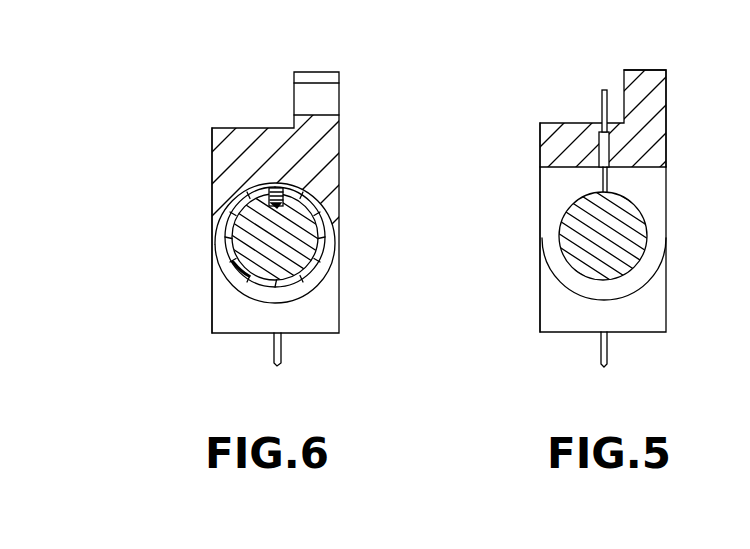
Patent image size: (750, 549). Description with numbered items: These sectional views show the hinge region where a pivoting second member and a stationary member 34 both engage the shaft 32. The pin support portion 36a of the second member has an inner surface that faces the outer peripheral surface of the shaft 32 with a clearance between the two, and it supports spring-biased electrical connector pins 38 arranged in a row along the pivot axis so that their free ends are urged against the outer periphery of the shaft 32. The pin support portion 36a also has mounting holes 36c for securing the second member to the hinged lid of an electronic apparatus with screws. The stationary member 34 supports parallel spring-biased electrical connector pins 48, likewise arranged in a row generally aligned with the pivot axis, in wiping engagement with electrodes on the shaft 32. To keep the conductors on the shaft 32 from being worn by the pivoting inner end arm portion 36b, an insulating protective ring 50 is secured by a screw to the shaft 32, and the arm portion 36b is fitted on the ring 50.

In FIG. 6, the shaft 32 is at (297, 230).
In FIG. 5, the shaft 32 is at (630, 232).
In FIG. 6, the stationary member 34 is at (327, 303).
In FIG. 5, the stationary member 34 is at (650, 310).
In FIG. 5, the pin support portion 36a is at (650, 135).
In FIG. 6, the arm portion 36b is at (212, 222).
In FIG. 5, the arm portion 36b is at (543, 238).
In FIG. 6, the mounting hole 36c is at (316, 82).
In FIG. 5, the spring-biased electrical connector pin 38 is at (602, 91).
In FIG. 6, the spring-biased electrical connector pin 48 is at (275, 360).
In FIG. 5, the spring-biased electrical connector pin 48 is at (603, 360).
In FIG. 6, the protective ring 50 is at (242, 272).